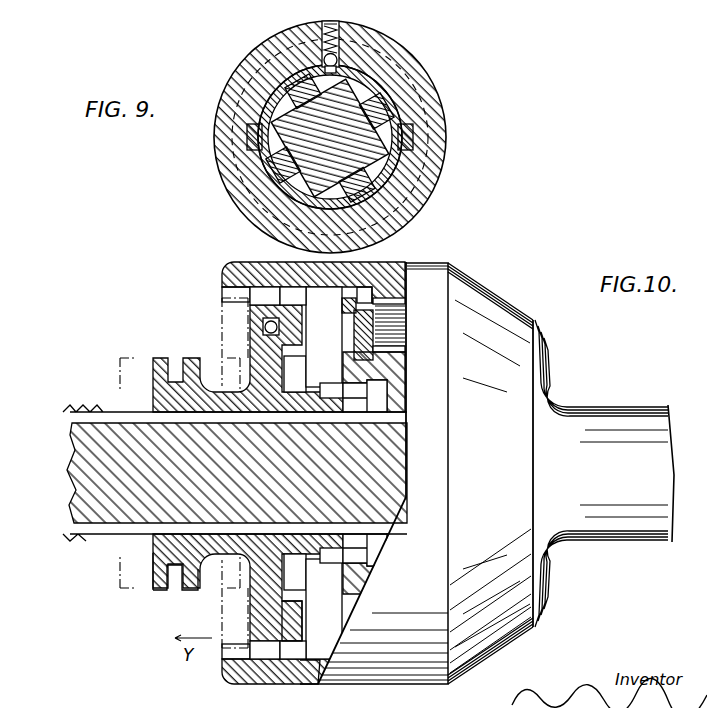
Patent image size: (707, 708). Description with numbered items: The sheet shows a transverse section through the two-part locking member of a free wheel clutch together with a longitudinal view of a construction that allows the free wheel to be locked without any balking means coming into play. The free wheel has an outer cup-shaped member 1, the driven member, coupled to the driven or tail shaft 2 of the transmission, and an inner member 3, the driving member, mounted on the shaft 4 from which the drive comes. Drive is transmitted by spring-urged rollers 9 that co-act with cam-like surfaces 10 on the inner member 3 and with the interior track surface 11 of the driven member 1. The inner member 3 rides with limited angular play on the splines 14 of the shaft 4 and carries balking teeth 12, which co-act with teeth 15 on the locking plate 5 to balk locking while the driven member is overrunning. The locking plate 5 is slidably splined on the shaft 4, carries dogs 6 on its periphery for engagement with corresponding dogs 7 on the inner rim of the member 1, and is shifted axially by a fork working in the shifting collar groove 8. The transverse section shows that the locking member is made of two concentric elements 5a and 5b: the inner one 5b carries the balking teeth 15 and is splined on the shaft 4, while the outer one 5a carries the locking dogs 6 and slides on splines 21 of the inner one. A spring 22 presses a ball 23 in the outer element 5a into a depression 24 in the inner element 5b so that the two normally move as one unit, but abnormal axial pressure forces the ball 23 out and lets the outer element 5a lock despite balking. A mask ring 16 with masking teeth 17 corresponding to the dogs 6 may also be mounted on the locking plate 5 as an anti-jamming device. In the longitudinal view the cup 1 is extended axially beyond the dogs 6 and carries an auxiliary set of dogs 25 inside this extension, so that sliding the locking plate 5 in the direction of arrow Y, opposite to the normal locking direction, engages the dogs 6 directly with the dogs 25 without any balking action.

In FIG. 10, the outer cup-shaped member 1 is at (450, 266).
In FIG. 10, the driven or tail shaft 2 is at (610, 425).
In FIG. 10, the inner member 3 is at (385, 385).
In FIG. 10, the shaft 4 is at (122, 462).
In FIG. 10, the locking plate 5 is at (262, 358).
In FIG. 9, the outer element 5a is at (226, 170).
In FIG. 9, the inner element 5b is at (410, 175).
In FIG. 10, the dogs 6 is at (268, 293).
In FIG. 10, the dogs 7 is at (332, 297).
In FIG. 10, the shifting collar groove 8 is at (175, 586).
In FIG. 10, the spring-urged rollers 9 is at (403, 338).
In FIG. 9, the cam-like surfaces 10 is at (300, 10).
In FIG. 10, the cam-like surfaces 10 is at (402, 347).
In FIG. 9, the interior track surface 11 is at (377, 7).
In FIG. 10, the interior track surface 11 is at (395, 307).
In FIG. 10, the balking teeth 12 is at (372, 412).
In FIG. 10, the splines 14 is at (307, 527).
In FIG. 10, the teeth 15 is at (332, 388).
In FIG. 10, the mask ring 16 is at (297, 656).
In FIG. 10, the masking teeth 17 is at (285, 648).
In FIG. 9, the splines 21 is at (410, 131).
In FIG. 9, the spring 22 is at (321, 24).
In FIG. 9, the spring pressed ball 23 is at (338, 66).
In FIG. 9, the depression 24 is at (352, 68).
In FIG. 10, the auxiliary set of dogs 25 is at (230, 296).